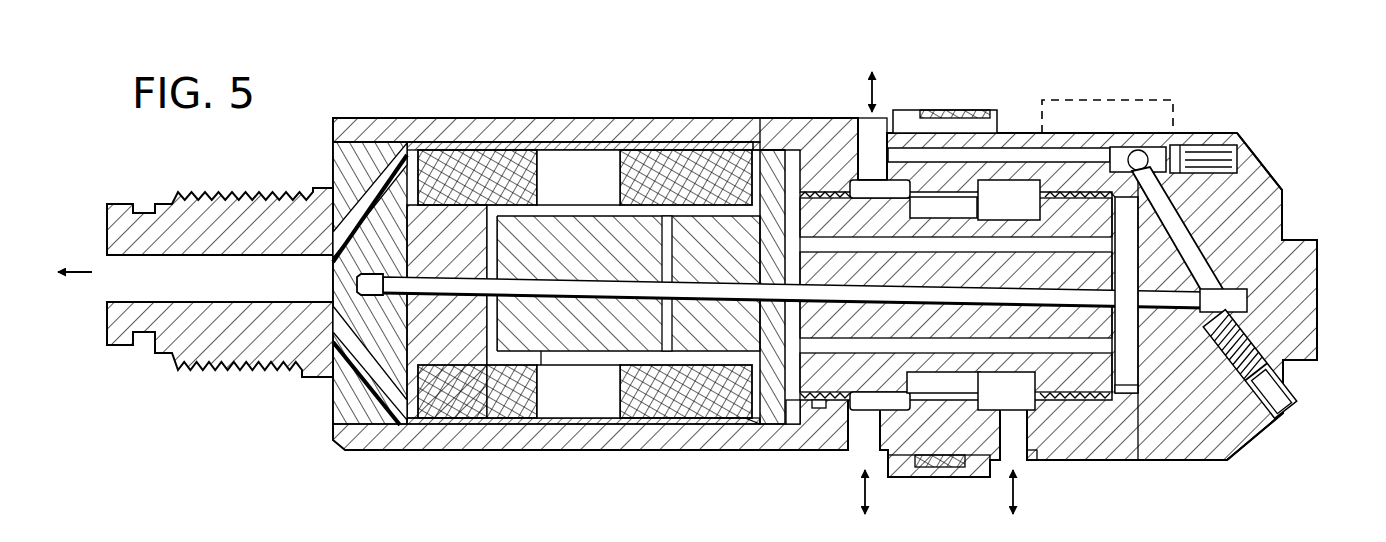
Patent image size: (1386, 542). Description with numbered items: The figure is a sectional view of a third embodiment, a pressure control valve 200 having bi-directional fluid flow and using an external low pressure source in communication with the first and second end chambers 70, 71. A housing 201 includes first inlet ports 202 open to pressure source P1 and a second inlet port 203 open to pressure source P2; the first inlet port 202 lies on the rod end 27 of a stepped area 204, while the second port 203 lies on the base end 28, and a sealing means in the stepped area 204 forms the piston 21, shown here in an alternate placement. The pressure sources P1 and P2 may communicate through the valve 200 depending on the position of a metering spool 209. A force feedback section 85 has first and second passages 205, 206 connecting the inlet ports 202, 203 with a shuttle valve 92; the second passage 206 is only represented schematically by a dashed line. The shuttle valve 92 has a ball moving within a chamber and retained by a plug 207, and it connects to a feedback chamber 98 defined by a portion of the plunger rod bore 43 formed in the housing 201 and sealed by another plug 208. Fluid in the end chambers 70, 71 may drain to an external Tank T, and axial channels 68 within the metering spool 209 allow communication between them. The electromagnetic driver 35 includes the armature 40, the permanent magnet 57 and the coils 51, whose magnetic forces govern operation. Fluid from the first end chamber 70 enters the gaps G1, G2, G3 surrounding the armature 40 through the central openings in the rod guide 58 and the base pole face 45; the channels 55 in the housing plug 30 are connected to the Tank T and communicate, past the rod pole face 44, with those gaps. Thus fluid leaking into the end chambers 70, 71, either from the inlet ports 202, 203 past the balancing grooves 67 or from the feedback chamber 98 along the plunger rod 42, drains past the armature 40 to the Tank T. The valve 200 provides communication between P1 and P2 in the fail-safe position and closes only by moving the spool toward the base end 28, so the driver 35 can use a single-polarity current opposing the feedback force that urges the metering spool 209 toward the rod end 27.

The rod end 27 is at (326, 130).
The base end 28 is at (1268, 455).
The housing plug 30 is at (185, 372).
The channels 55 is at (263, 292).
The plunger rod 42 is at (352, 281).
The rod pole face 44 is at (405, 427).
The electromagnetic driver 35 is at (578, 125).
The pressure control valve 200 is at (430, 98).
The housing 201 is at (490, 118).
The armature 40 is at (660, 352).
The permanent magnet 57 is at (616, 150).
The coils 51 is at (700, 152).
The rod guide 58 is at (786, 150).
The first end chamber 70 is at (761, 148).
The gap G1 is at (488, 430).
The gap G2 is at (672, 350).
The gap G3 is at (541, 430).
The base pole face 45 is at (755, 430).
The metering spool 209 is at (792, 440).
The balancing grooves 67 is at (820, 408).
The piston 21 is at (978, 478).
The first inlet ports 202 is at (857, 116).
The second inlet port 203 is at (1030, 460).
The stepped area 204 is at (985, 110).
The first passage 205 is at (918, 118).
The second passage 206 is at (1090, 100).
The second end chamber 71 is at (1112, 440).
The axial channels 68 is at (1125, 380).
The plunger rod bore 43 is at (1222, 310).
The force feedback section 85 is at (1215, 90).
The shuttle valve 92 is at (1134, 145).
The plug 207 is at (1237, 133).
The feedback chamber 98 is at (1250, 298).
The plug 208 is at (1283, 388).
The pressure source P1 is at (867, 290).
The pressure source P2 is at (1015, 506).
The Tank T is at (56, 273).